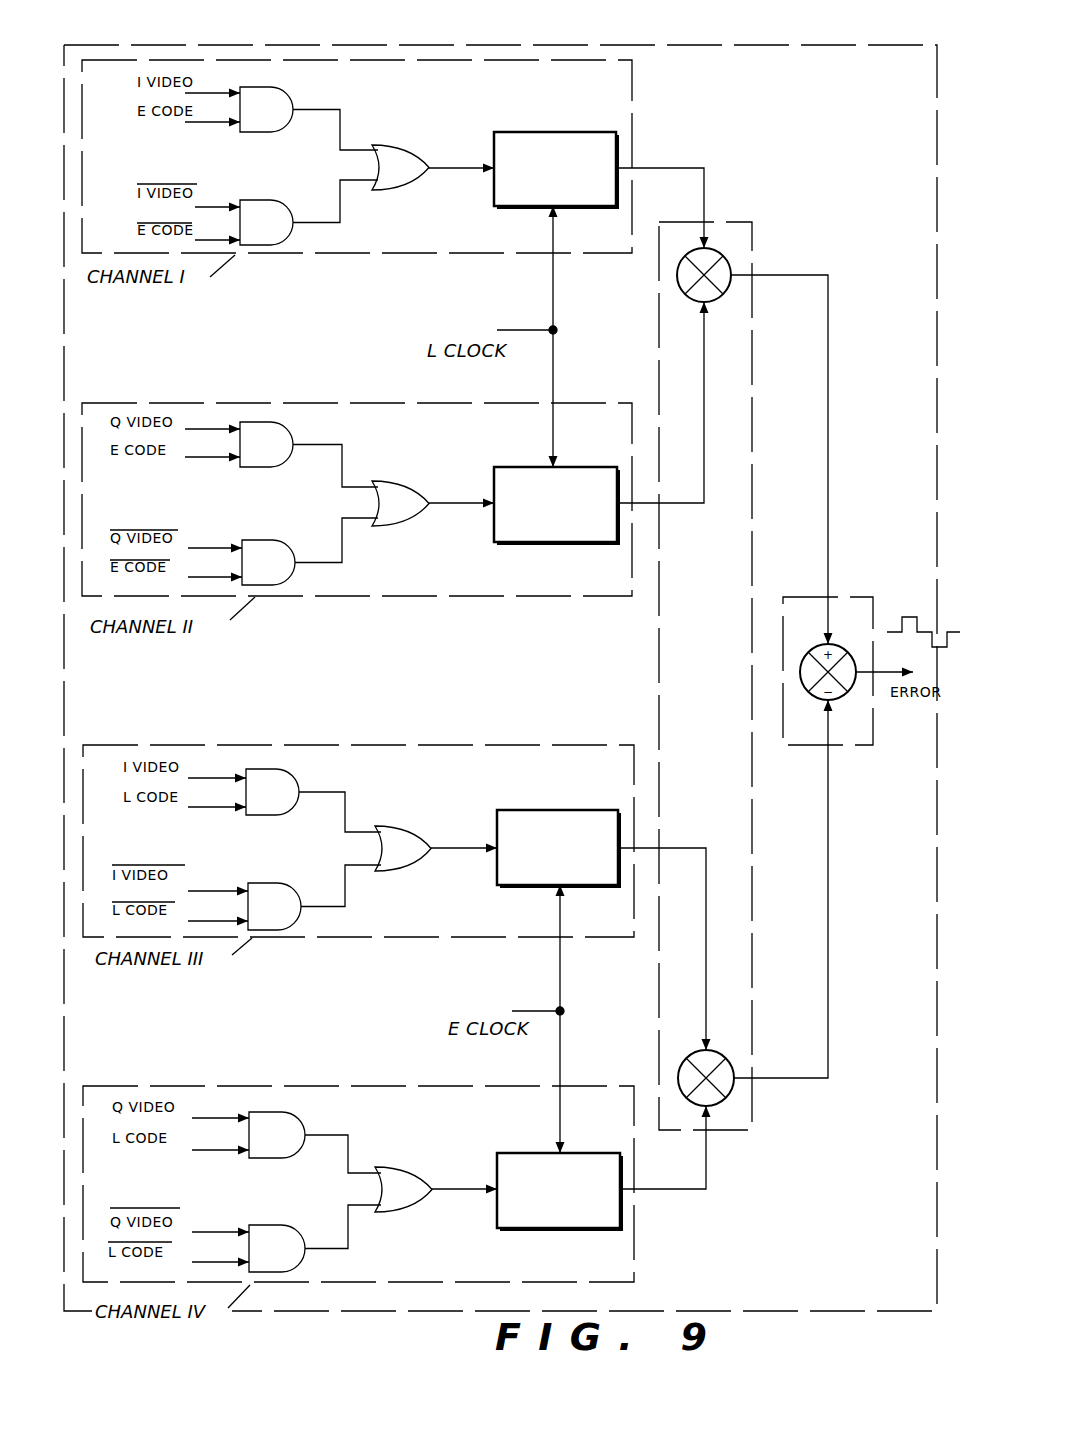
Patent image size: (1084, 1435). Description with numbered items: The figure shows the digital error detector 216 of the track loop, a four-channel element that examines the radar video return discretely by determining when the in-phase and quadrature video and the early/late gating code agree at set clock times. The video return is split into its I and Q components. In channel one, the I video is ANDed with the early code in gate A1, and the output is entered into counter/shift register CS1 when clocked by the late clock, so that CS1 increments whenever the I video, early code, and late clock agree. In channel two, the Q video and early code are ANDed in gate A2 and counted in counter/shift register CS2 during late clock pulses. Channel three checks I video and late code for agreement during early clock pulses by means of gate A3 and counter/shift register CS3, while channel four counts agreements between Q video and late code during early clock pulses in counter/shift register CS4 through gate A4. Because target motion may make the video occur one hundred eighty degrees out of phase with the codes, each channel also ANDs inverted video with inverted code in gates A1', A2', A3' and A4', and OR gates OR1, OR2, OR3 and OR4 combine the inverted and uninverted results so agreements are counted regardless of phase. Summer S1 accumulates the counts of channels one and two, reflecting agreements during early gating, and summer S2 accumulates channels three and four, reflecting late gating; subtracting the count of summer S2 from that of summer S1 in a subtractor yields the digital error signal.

The digital error detector 216 is at (587, 45).
The gate A1 is at (260, 103).
The gate A1' is at (253, 208).
The gate A2 is at (258, 439).
The gate A2' is at (256, 550).
The gate A3 is at (257, 785).
The gate A3' is at (253, 893).
The gate A4 is at (267, 1128).
The gate A4' is at (255, 1234).
The OR gate OR1 is at (390, 145).
The OR gate OR2 is at (410, 484).
The OR gate OR3 is at (392, 825).
The OR gate OR4 is at (390, 1163).
The counter/shift register CS1 is at (510, 131).
The counter/shift register CS2 is at (562, 465).
The counter/shift register CS3 is at (532, 808).
The counter/shift register CS4 is at (542, 1150).
The summer S1 is at (727, 258).
The summer S2 is at (725, 1055).